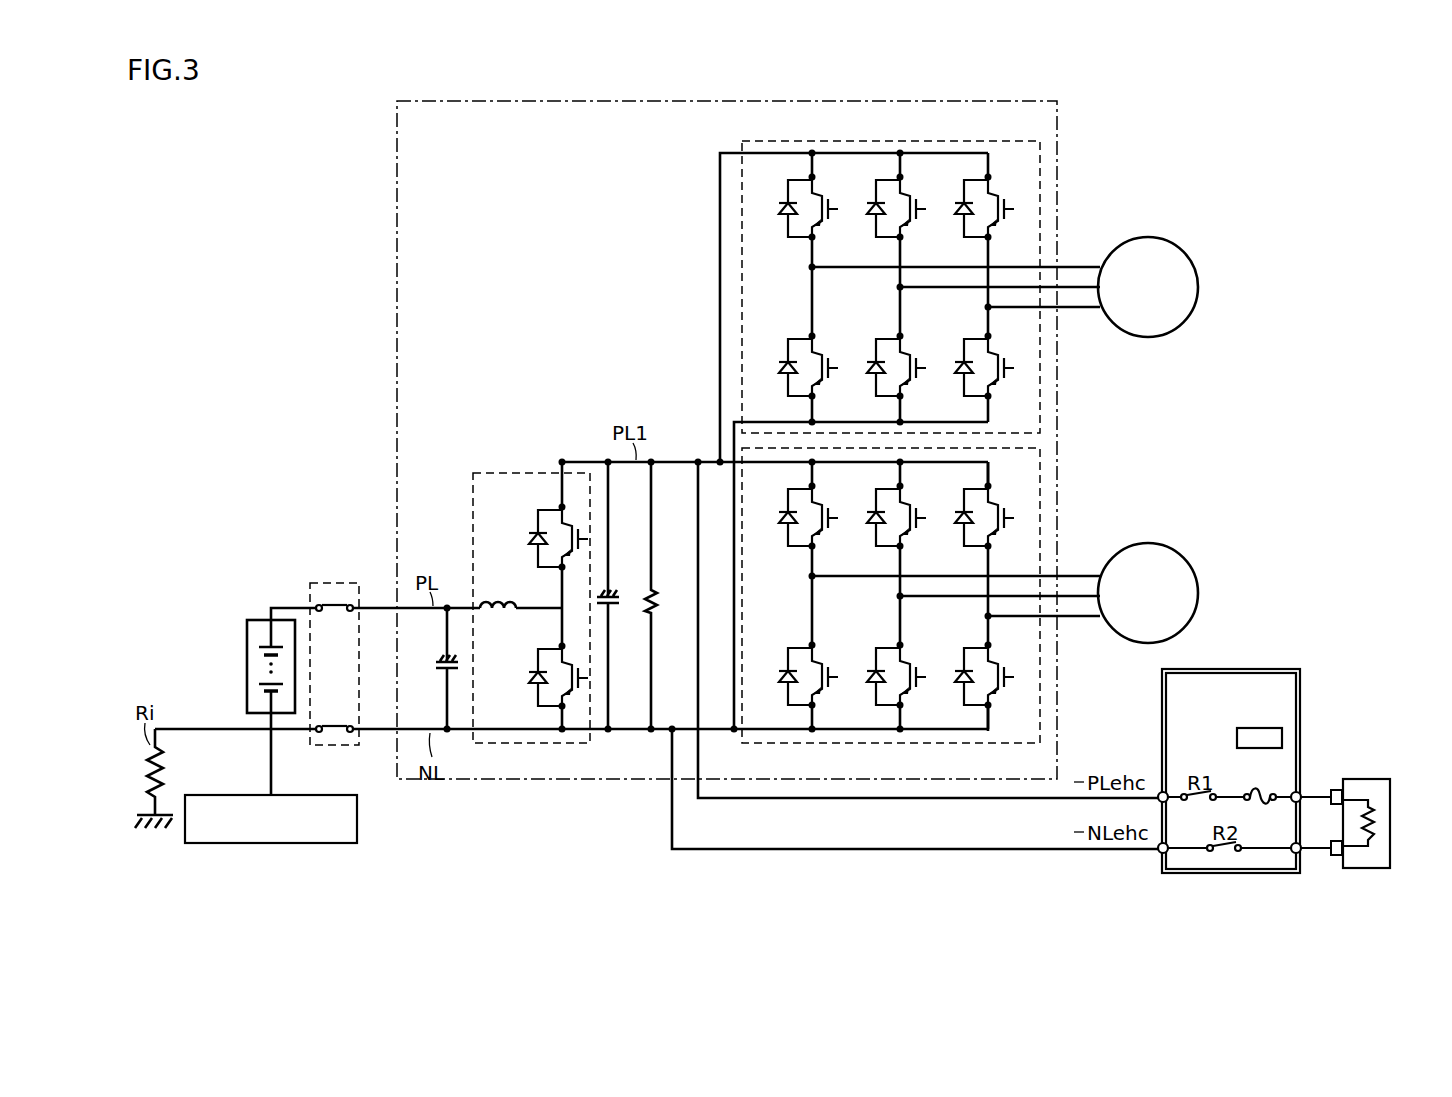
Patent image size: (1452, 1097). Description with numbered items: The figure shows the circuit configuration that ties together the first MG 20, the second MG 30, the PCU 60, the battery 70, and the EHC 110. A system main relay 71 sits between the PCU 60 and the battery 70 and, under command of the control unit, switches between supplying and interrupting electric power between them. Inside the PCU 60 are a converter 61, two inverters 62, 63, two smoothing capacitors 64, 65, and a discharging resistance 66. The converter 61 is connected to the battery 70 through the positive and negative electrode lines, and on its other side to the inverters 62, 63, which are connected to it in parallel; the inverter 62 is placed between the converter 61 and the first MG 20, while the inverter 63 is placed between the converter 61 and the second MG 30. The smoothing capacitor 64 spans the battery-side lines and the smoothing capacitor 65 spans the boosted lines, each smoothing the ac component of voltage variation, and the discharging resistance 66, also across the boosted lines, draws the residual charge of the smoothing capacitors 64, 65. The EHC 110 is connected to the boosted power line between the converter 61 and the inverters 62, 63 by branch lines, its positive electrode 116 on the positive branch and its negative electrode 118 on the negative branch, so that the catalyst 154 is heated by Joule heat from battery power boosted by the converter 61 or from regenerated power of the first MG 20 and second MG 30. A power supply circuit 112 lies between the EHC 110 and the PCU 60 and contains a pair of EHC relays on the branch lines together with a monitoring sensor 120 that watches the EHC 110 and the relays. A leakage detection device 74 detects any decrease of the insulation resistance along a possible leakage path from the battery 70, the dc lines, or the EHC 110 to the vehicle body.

The first MG 20 is at (1171, 549).
The second MG 30 is at (1171, 244).
The PCU 60 is at (397, 256).
The converter 61 is at (540, 473).
The inverter 62 is at (810, 746).
The inverter 63 is at (976, 141).
The smoothing capacitor 64 is at (445, 667).
The smoothing capacitor 65 is at (618, 601).
The discharging resistance 66 is at (657, 601).
The battery 70 is at (247, 709).
The system main relay 71 is at (335, 583).
The leakage detection device 74 is at (297, 796).
The EHC 110 is at (1358, 765).
The power supply circuit 112 is at (1275, 669).
The positive electrode 116 is at (1336, 790).
The negative electrode 118 is at (1336, 855).
The monitoring sensor 120 is at (1261, 728).
The catalyst 154 is at (1362, 779).